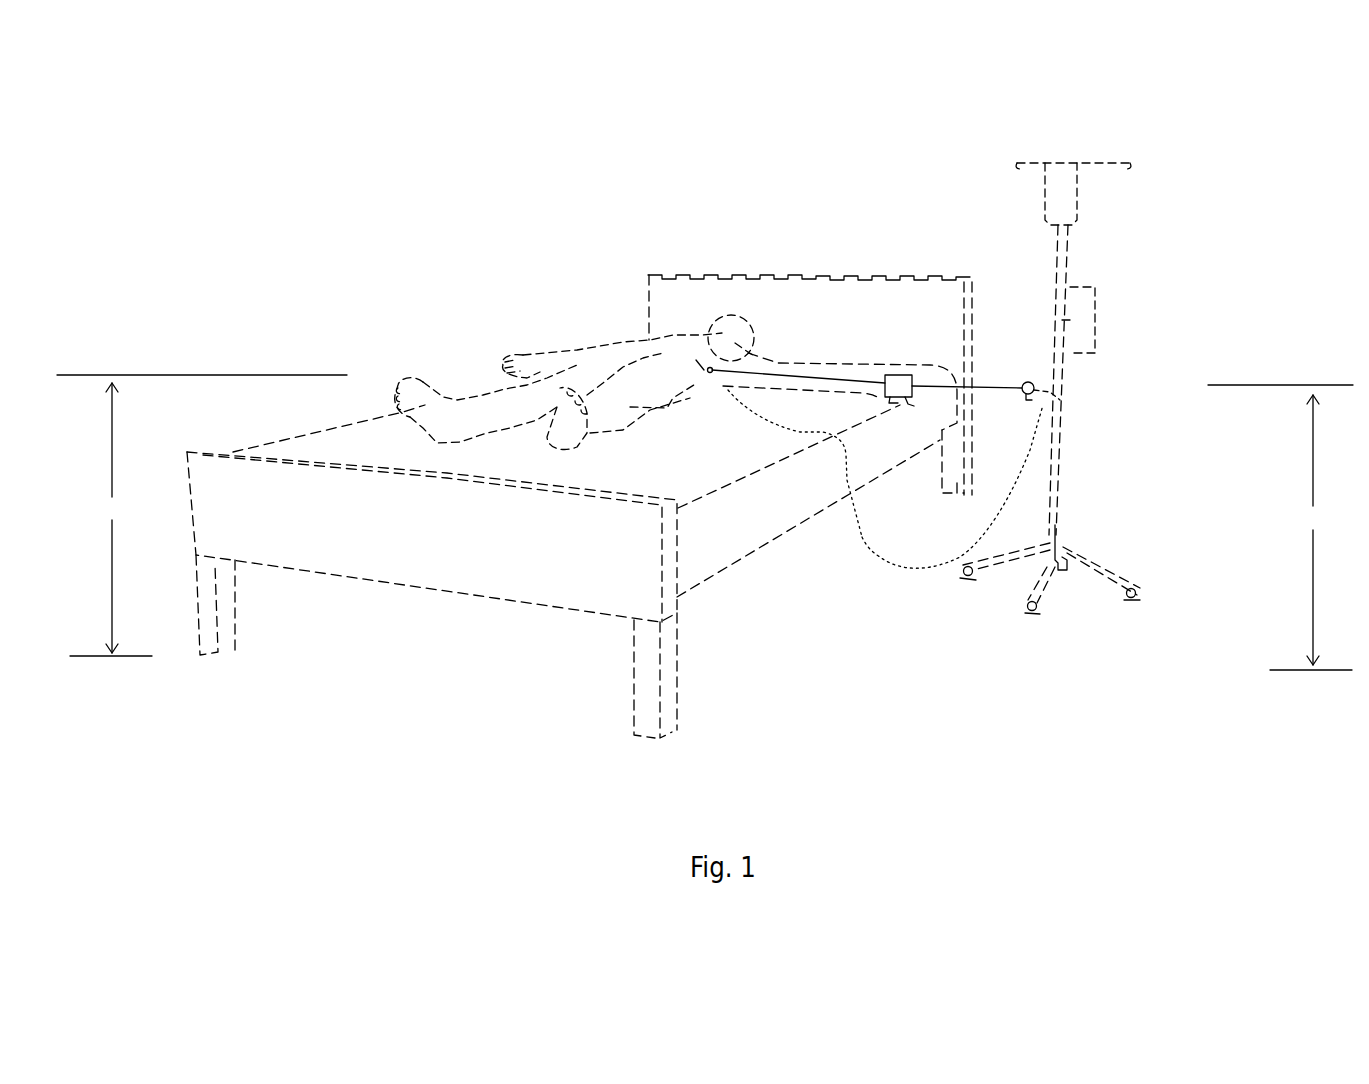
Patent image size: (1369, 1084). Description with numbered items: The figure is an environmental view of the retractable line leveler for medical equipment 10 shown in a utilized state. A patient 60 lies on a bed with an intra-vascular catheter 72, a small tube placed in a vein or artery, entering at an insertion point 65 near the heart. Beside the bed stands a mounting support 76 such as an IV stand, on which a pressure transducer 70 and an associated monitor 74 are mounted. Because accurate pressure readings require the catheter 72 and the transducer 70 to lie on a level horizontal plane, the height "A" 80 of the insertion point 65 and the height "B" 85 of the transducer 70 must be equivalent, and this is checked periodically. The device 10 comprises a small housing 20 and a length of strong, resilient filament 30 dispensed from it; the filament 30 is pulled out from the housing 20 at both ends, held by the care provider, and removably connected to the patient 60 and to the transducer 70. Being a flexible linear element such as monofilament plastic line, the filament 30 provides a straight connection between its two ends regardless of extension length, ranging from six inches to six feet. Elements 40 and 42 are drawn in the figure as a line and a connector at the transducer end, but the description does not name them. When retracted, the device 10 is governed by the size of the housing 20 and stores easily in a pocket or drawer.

The retractable line leveler for medical equipment 10 is at (918, 323).
The housing 20 is at (900, 400).
The filament 30 is at (805, 380).
The catheter tubing 40 is at (711, 374).
The connector 42 is at (1028, 380).
The patient 60 is at (617, 351).
The insertion point 65 is at (698, 364).
The transducer 70 is at (1063, 393).
The intra-vascular catheter 72 is at (927, 573).
The monitor 74 is at (1095, 317).
The mounting support 76 is at (1080, 208).
The height "A" 80 is at (125, 508).
The height "B" 85 is at (1305, 515).